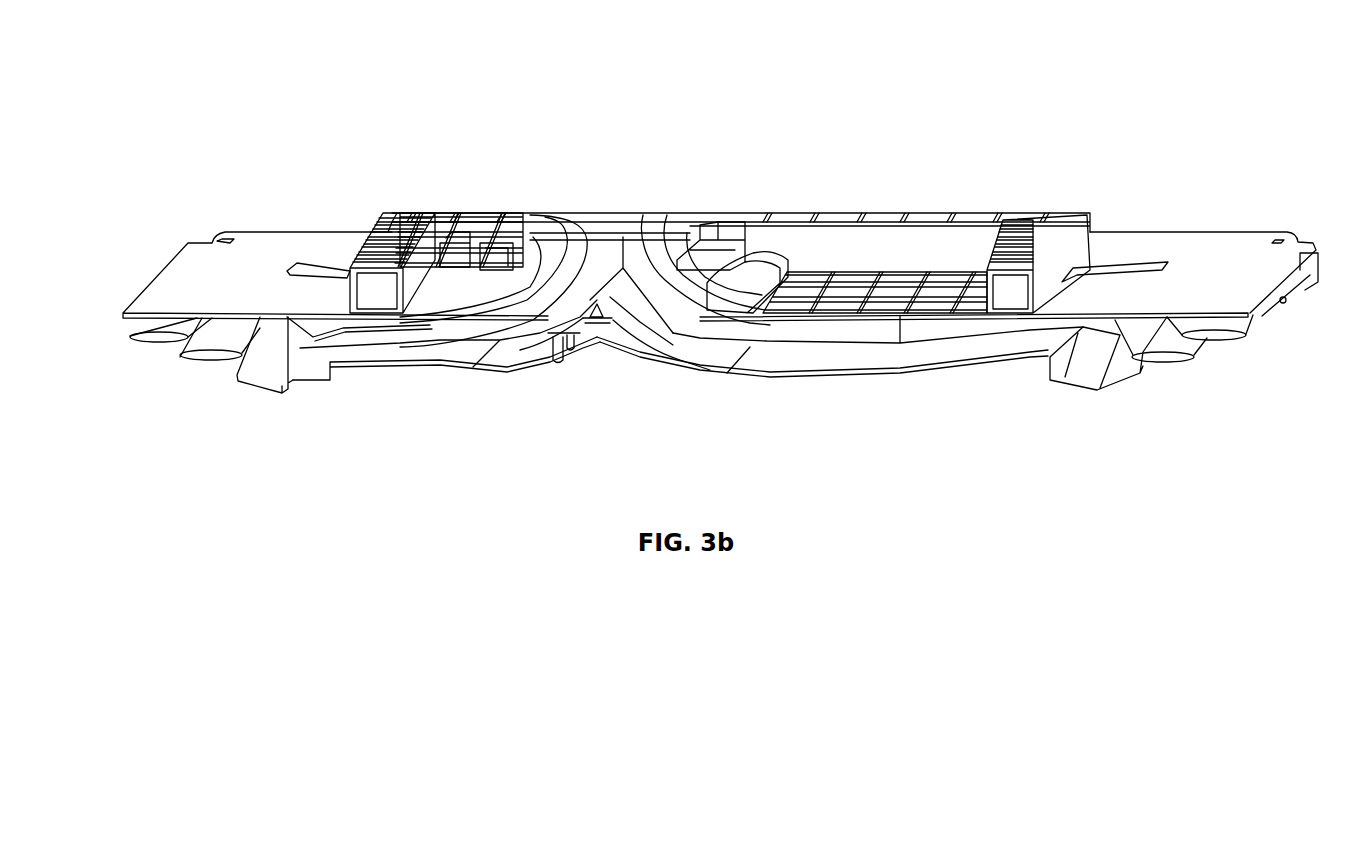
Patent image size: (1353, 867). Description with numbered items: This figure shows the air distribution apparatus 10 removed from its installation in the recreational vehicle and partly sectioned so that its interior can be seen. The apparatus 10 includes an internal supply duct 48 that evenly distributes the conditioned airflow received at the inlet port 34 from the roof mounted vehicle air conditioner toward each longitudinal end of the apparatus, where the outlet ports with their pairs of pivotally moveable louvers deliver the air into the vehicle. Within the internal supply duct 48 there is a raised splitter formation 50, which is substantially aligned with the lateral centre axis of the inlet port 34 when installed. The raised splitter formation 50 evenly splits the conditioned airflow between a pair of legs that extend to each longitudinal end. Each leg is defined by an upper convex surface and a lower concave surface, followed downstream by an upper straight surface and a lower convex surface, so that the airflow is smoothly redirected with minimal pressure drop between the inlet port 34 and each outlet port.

The air distribution apparatus 10 is at (965, 150).
The inlet port 34 is at (527, 250).
The internal supply duct 48 is at (676, 355).
The raised splitter formation 50 is at (607, 237).